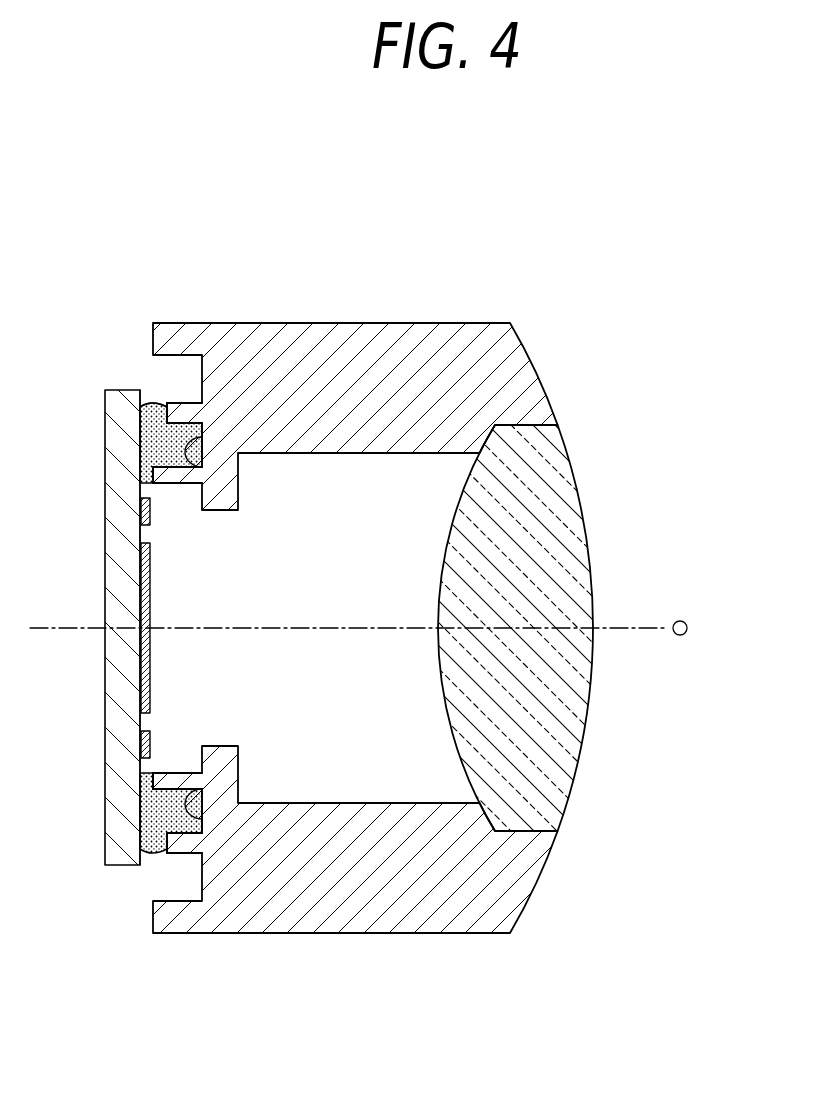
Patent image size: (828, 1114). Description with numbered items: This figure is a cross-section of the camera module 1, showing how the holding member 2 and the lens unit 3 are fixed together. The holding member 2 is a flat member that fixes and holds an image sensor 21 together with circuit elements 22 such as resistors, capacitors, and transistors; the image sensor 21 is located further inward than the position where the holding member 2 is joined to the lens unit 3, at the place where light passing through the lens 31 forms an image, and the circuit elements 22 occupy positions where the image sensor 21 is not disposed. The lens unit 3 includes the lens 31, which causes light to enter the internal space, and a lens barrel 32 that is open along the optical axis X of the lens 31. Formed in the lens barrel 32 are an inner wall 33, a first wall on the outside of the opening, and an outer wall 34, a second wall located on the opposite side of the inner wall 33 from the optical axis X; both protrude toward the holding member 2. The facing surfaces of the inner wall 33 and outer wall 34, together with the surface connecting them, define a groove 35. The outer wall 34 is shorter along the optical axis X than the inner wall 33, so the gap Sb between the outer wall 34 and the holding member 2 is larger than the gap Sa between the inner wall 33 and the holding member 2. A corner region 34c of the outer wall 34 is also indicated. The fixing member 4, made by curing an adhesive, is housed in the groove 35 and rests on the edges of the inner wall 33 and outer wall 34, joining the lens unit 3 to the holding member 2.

The camera module 1 is at (414, 557).
The holding member 2 is at (414, 675).
The image sensor 21 is at (150, 610).
The circuit elements 22 is at (150, 517).
The lens unit 3 is at (414, 557).
The lens 31 is at (568, 698).
The lens barrel 32 is at (352, 368).
The inner wall 33 is at (170, 477).
The outer wall 34 is at (233, 562).
The corner of second projecting portion 34c is at (160, 403).
The groove 35 is at (190, 442).
The fixing member 4 is at (154, 632).
The gap Sa is at (140, 487).
The gap Sb is at (153, 412).
The optical axis X is at (371, 629).